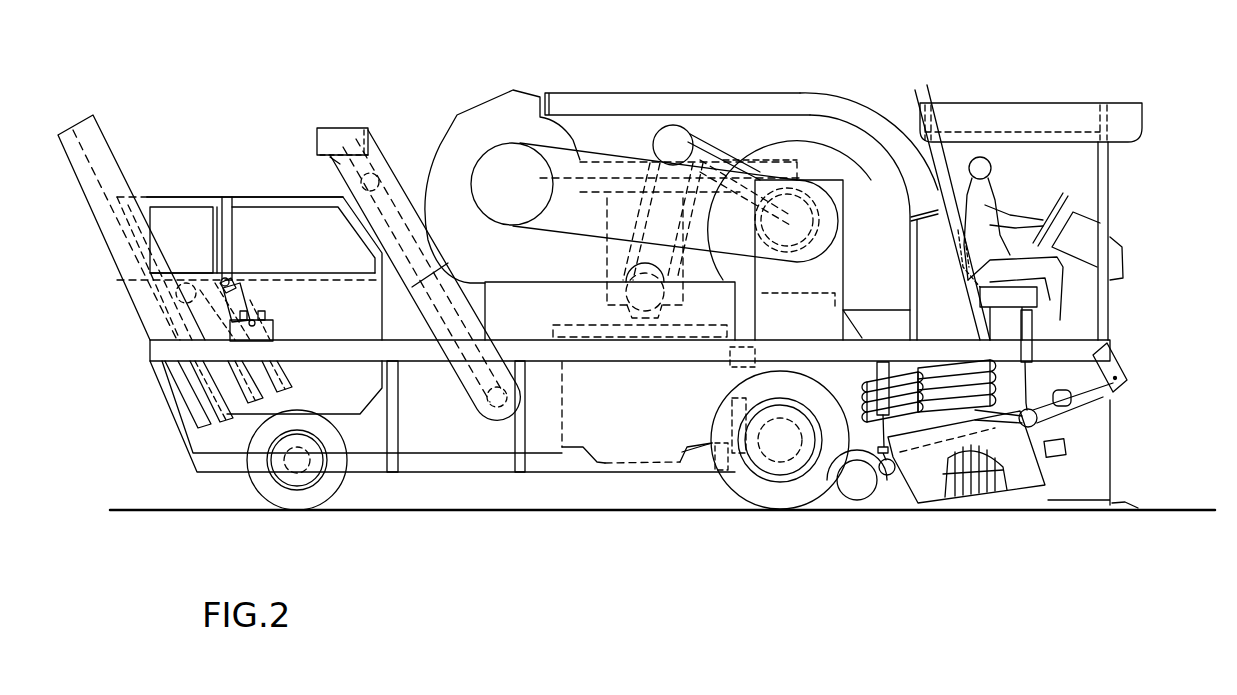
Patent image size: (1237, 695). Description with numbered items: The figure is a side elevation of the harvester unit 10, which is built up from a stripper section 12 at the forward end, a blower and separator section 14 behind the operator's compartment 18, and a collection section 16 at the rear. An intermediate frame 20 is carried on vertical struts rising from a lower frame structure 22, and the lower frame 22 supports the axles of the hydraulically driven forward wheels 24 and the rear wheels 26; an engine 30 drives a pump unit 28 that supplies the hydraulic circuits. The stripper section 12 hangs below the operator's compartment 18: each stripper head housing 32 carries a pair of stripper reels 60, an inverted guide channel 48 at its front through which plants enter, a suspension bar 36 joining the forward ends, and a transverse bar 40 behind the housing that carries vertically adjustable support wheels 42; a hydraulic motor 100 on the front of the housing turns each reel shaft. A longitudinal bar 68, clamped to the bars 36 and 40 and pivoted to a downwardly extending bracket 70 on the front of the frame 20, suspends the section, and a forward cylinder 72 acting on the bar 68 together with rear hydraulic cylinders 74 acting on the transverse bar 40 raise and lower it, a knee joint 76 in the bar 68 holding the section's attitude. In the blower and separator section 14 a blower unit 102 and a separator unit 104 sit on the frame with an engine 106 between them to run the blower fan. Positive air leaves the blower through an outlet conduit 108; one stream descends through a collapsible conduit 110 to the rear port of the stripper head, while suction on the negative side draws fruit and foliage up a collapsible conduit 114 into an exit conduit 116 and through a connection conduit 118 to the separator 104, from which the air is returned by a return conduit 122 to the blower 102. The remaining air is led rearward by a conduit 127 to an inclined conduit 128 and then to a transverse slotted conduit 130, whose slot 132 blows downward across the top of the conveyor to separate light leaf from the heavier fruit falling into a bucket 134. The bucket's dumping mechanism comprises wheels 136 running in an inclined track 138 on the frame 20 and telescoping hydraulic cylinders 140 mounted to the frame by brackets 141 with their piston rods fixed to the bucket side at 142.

The harvester unit 10 is at (645, 82).
The stripper section 12 is at (1125, 466).
The blower and separator section 14 is at (700, 130).
The collection section 16 is at (250, 180).
The operator's compartment 18 is at (1126, 183).
The intermediate frame 20 is at (410, 350).
The lower frame structure 22 is at (448, 463).
The forward wheels 24 is at (767, 493).
The rear wheels 26 is at (322, 493).
The pump unit 28 is at (750, 450).
The engine 30 is at (653, 438).
The stripper head housing 32 is at (1033, 477).
The suspension bar 36 is at (1037, 420).
The transverse bar 40 is at (889, 476).
The support wheels 42 is at (868, 492).
The inverted guide channel 48 is at (1090, 478).
The stripper reels 60 is at (972, 470).
The longitudinal bar 68 is at (1085, 390).
The bracket 70 is at (1113, 365).
The forward cylinder 72 is at (1027, 330).
The rear hydraulic cylinders 74 is at (885, 393).
The knee joint 76 is at (1071, 400).
The hydraulic motor 100 is at (1057, 456).
The blower unit 102 is at (817, 160).
The separator unit 104 is at (500, 123).
The engine 106 is at (620, 253).
The outlet conduit 108 is at (867, 320).
The collapsible conduit 110 is at (882, 432).
The collapsible conduit 114 is at (957, 403).
The exit conduit 116 is at (930, 268).
The connection conduit 118 is at (650, 95).
The return conduit 122 is at (590, 197).
The conduit 127 is at (590, 302).
The inclined conduit 128 is at (393, 170).
The slotted conduit 130 is at (337, 128).
The slot 132 is at (332, 163).
The bucket 134 is at (180, 197).
The wheels 136 is at (181, 297).
The inclined track 138 is at (115, 170).
The telescoping hydraulic cylinders 140 is at (240, 297).
The brackets 141 is at (242, 333).
The piston rod attachment point 142 is at (228, 278).